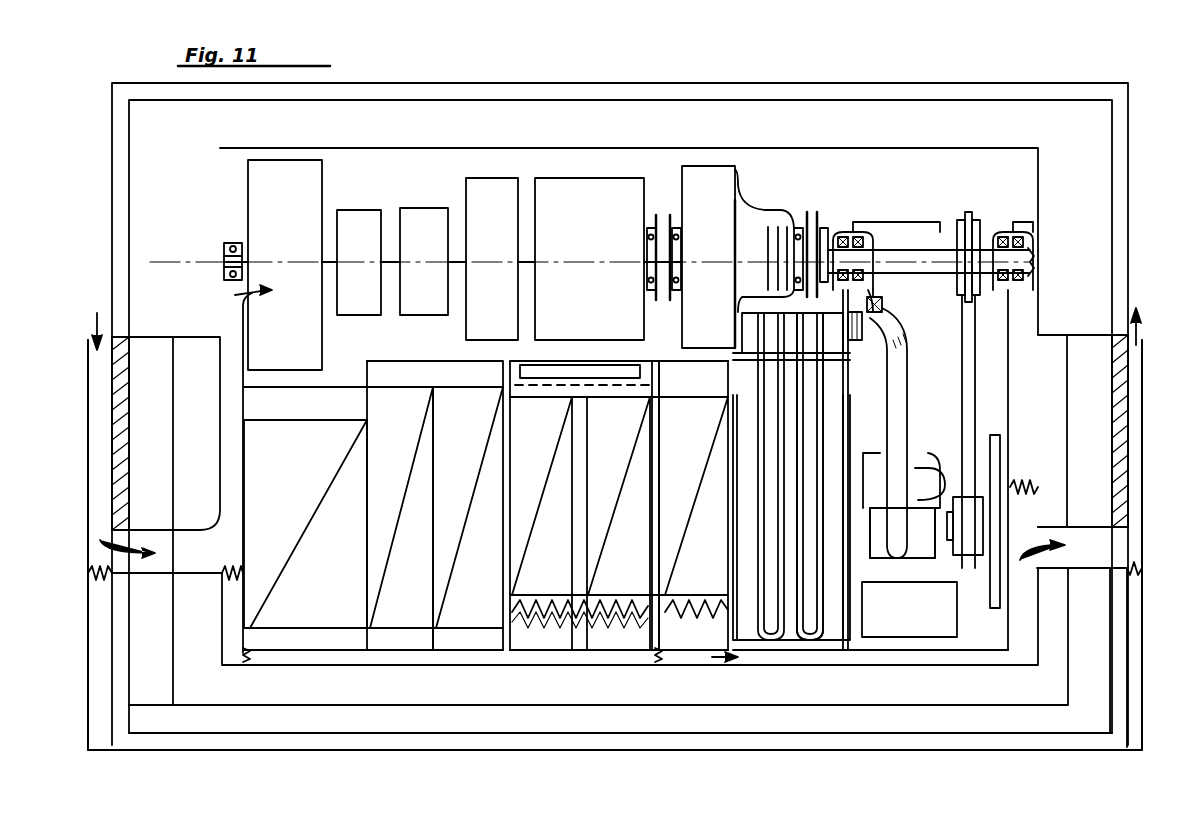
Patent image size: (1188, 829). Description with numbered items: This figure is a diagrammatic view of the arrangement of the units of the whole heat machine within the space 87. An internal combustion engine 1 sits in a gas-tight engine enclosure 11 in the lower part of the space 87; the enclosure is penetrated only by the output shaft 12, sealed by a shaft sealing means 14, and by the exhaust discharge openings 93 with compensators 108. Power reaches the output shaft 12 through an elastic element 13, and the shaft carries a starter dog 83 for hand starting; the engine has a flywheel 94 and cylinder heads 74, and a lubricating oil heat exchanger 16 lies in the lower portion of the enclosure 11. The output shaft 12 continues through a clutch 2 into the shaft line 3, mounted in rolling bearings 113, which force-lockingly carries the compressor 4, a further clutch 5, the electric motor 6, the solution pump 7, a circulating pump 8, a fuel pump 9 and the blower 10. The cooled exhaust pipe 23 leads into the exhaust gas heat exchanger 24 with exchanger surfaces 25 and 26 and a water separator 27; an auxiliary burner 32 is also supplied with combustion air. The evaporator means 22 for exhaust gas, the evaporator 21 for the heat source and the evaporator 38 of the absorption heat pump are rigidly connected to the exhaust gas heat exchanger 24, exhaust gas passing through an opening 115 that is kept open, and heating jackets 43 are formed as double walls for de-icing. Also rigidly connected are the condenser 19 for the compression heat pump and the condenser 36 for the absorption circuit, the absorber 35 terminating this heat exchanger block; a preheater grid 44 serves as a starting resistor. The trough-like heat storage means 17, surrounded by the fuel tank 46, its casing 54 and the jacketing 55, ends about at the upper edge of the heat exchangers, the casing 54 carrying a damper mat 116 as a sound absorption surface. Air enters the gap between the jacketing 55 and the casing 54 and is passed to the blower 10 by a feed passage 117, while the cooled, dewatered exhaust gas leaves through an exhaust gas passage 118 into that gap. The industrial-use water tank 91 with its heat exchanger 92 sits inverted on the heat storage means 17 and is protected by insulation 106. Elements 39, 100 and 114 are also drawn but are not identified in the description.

The internal combustion engine 1 is at (932, 560).
The clutch 2 is at (812, 215).
The shaft 3 is at (527, 262).
The compressor 4 is at (722, 175).
The further clutch 5 is at (666, 215).
The electric motor 6 is at (585, 185).
The solution pump 7 is at (488, 185).
The circulating pump 8 is at (424, 215).
The fuel pump 9 is at (360, 215).
The blower 10 is at (290, 170).
The engine enclosure 11 is at (940, 652).
The output shaft 12 is at (975, 292).
The elastic element 13 is at (965, 560).
The shaft sealing means 14 is at (840, 235).
The lubricating oil heat exchanger 16 is at (888, 640).
The heat storage means 17 is at (190, 465).
The condenser for the compression heat pump 19 is at (468, 518).
The evaporator for the heat source 21 is at (623, 505).
The evaporator means for exhaust gas 22 is at (696, 505).
The exhaust pipe 23 is at (903, 412).
The exhaust gas heat exchanger 24 is at (788, 668).
The exchanger surface 25 is at (806, 640).
The exchanger surface 26 is at (810, 476).
The water separator 27 is at (695, 565).
The auxiliary burner 32 is at (915, 468).
The absorber 35 is at (373, 535).
The condenser of the absorption heat pump circuit 36 is at (400, 505).
The evaporator of the absorption heat pump circuit 38 is at (619, 523).
The filter mat 39 is at (602, 612).
The heating jacket 43 is at (505, 652).
The preheater grid 44 is at (600, 390).
The fuel tank 46 is at (135, 500).
The casing 54 is at (112, 385).
The jacketing 55 is at (88, 405).
The cylinder heads 74 is at (913, 560).
The starter dog 83 is at (1048, 270).
The space 87 is at (628, 440).
The industrial-use water container 91 is at (150, 142).
The heat exchanger 92 is at (640, 372).
The discharge openings 93 is at (900, 330).
The flywheel 94 is at (995, 612).
The housing wall 100 is at (735, 340).
The insulation 106 is at (117, 95).
The compensators 108 is at (857, 340).
The rolling bearings 113 is at (240, 250).
The flexible joint 114 is at (100, 568).
The opening 115 is at (718, 380).
The damper mat 116 is at (115, 437).
The feed passage 117 is at (232, 530).
The exhaust gas passage 118 is at (1120, 548).